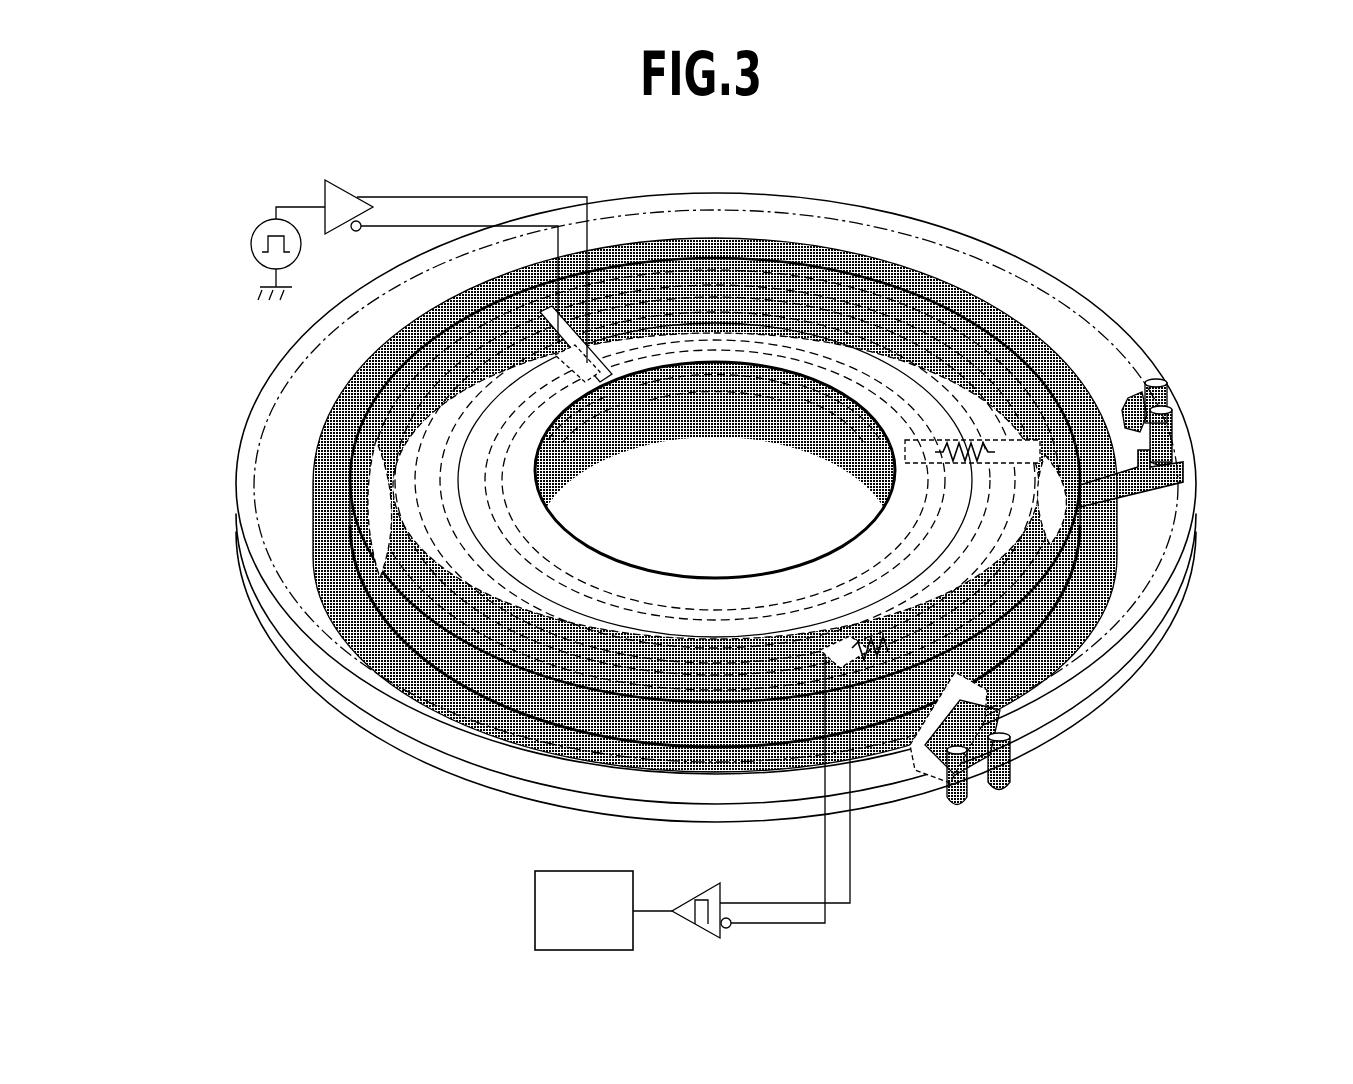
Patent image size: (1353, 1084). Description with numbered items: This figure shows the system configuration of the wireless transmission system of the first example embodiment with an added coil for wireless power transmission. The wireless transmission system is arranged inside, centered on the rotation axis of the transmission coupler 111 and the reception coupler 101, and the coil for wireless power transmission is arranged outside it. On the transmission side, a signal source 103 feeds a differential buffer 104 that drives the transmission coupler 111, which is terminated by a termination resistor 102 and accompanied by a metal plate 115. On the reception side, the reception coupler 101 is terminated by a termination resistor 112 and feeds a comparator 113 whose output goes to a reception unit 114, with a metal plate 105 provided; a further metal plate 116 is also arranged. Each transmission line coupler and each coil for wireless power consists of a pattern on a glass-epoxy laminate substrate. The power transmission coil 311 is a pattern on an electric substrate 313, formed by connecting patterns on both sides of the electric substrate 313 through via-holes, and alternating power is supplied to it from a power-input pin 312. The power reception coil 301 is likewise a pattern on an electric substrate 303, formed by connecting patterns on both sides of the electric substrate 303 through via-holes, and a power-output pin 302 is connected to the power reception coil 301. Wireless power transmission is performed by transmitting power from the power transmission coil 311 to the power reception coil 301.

The reception coupler 101 is at (470, 627).
The termination resistor 102 is at (978, 440).
The signal source 103 is at (266, 222).
The differential buffer 104 is at (345, 186).
The metal plate 105 is at (390, 540).
The transmission coupler 111 is at (770, 333).
The termination resistor 112 is at (868, 648).
The comparator 113 is at (715, 886).
The reception unit 114 is at (535, 912).
The metal plate 115 is at (830, 393).
The metal plate 116 is at (577, 427).
The power reception coil 301 is at (443, 678).
The power-output pin 302 is at (957, 810).
The electric substrate 303 is at (245, 604).
The power transmission coil 311 is at (910, 290).
The power-input pin 312 is at (1172, 442).
The electric substrate 313 is at (630, 193).